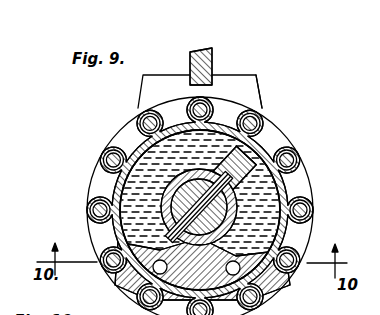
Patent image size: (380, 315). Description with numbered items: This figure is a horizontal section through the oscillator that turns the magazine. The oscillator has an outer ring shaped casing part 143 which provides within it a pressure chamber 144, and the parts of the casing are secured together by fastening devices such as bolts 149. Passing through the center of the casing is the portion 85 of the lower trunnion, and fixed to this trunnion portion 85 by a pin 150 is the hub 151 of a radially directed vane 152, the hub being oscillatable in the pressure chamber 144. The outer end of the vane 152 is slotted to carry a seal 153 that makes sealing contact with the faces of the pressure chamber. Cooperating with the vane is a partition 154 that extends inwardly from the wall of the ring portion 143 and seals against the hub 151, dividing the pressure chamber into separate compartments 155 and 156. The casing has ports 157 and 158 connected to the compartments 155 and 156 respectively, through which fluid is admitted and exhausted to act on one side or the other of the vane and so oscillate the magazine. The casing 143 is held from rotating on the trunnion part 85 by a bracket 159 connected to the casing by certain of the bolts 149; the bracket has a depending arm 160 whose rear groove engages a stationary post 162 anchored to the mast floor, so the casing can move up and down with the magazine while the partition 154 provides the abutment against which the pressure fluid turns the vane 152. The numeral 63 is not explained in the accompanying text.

The bolt 63 is at (98, 203).
The trunnion portion 85 is at (232, 205).
The ring shaped casing part 143 is at (128, 134).
The pressure chamber 144 is at (310, 190).
The bolts 149 is at (257, 126).
The pin 150 is at (123, 182).
The hub 151 is at (190, 213).
The vane 152 is at (262, 158).
The seal 153 is at (255, 150).
The partition 154 is at (142, 294).
The compartment 155 is at (110, 152).
The compartment 156 is at (304, 234).
The port 157 is at (153, 268).
The port 158 is at (290, 278).
The bracket 159 is at (259, 82).
The depending arm 160 is at (214, 77).
The stationary post 162 is at (210, 52).